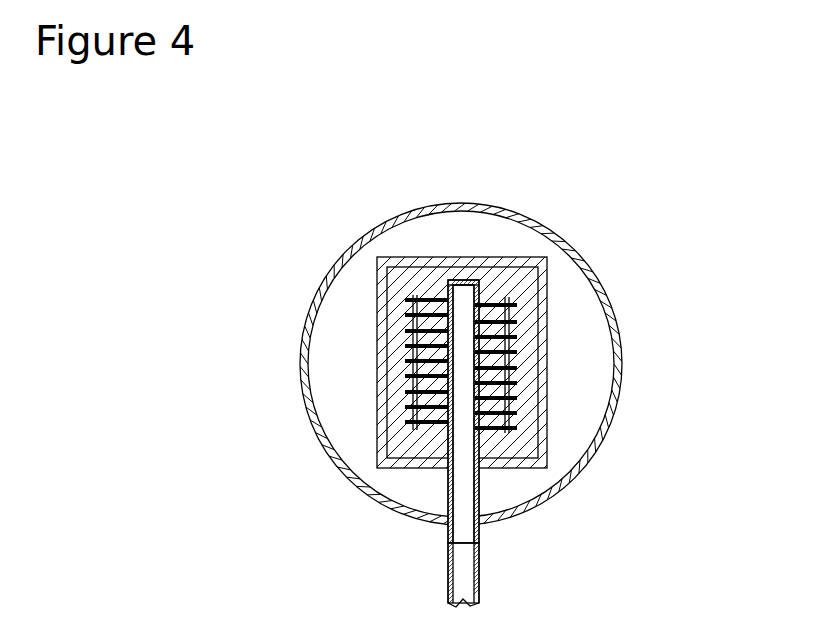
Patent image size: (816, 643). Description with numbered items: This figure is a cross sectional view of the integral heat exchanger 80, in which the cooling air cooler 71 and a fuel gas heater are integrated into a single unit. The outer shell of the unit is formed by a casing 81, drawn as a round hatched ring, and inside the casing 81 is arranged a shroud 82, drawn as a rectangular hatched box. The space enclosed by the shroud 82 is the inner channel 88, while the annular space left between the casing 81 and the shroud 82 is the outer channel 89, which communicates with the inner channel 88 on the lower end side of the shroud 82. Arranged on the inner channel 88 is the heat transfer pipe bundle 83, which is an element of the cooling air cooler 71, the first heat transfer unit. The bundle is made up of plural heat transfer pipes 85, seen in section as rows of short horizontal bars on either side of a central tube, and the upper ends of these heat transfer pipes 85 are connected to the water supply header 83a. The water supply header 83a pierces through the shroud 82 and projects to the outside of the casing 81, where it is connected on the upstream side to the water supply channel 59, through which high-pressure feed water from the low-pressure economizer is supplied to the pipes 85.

The integral heat exchanger 80 is at (680, 257).
The casing 81 is at (347, 257).
The outer channel 89 is at (398, 256).
The shroud 82 is at (547, 302).
The inner channel 88 is at (383, 374).
The heat transfer pipes 85 is at (413, 327).
The heat transfer pipe bundle 83 is at (517, 368).
The water supply header 83a is at (477, 283).
The cooling air cooler 71 is at (525, 334).
The water supply channel 59 is at (449, 569).